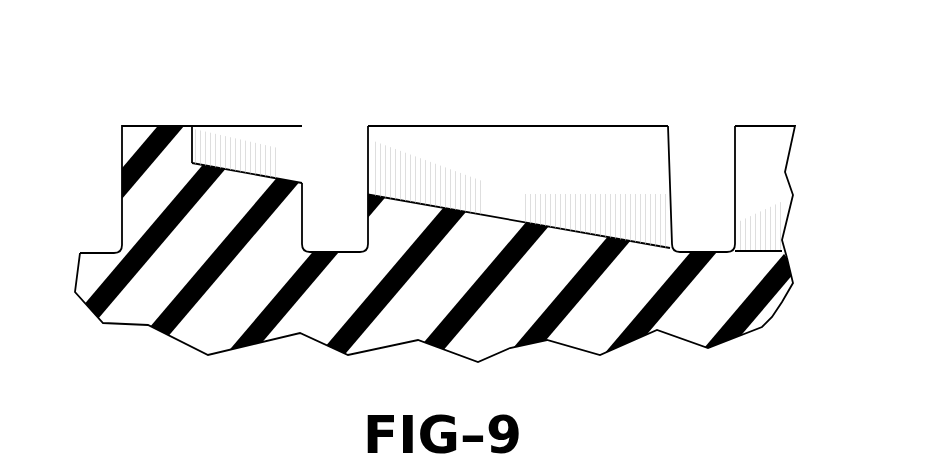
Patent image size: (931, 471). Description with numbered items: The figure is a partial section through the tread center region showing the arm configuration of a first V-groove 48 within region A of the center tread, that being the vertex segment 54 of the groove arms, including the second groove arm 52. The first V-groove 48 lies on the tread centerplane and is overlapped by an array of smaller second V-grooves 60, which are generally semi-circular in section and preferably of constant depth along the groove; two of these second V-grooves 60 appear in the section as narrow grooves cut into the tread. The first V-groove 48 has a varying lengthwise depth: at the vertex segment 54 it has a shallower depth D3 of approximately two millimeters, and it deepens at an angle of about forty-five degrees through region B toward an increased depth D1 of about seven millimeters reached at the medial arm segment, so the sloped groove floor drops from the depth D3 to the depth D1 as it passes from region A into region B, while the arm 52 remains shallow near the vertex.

The vertex segment 54 is at (215, 123).
The region A is at (241, 126).
The region B is at (448, 126).
The first V-groove 48 is at (607, 155).
The second V-groove 60 is at (335, 190).
The second groove arm 52 is at (762, 163).
The increased depth D1 is at (117, 126).
The shallower depth D3 is at (90, 210).